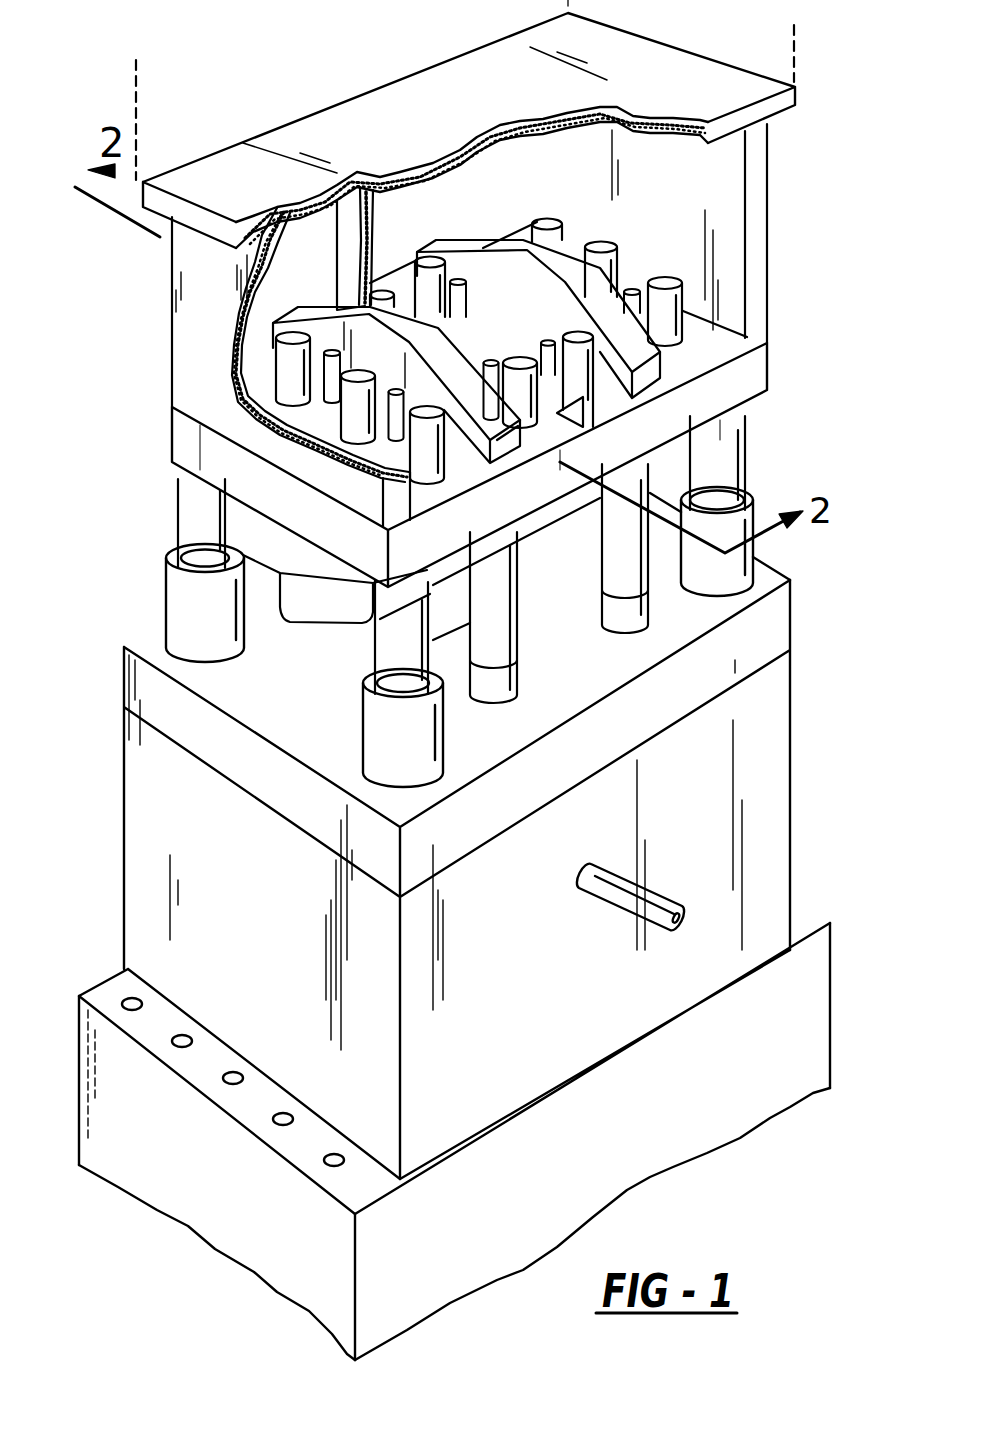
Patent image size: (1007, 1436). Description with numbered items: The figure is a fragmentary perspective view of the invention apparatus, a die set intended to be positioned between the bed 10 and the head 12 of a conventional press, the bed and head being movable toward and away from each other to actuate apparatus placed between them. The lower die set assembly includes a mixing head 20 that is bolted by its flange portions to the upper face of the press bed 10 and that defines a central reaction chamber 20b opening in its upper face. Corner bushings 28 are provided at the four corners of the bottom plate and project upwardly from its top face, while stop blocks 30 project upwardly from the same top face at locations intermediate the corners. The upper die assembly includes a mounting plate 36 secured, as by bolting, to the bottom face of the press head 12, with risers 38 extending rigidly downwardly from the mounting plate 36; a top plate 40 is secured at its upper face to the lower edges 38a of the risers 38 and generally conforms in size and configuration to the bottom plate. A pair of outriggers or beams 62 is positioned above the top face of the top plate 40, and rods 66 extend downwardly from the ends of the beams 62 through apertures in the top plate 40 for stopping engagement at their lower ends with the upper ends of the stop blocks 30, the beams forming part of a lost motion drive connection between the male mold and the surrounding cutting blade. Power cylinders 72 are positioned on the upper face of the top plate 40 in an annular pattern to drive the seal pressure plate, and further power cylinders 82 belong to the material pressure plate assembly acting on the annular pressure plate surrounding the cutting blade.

The bed 10 is at (210, 1196).
The head 12 is at (134, 100).
The mixing head 20 is at (218, 803).
The central reaction chamber 20b is at (204, 1066).
The corner bushings 28 is at (180, 589).
The stop blocks 30 is at (625, 622).
The mounting plate 36 is at (405, 115).
The risers 38 is at (203, 338).
The lower edges of risers 38a is at (760, 358).
The top plate 40 is at (747, 383).
The outriggers or beams 62 is at (546, 297).
The rods 66 is at (618, 525).
The power cylinders 72 is at (328, 381).
The power cylinders 82 is at (293, 340).